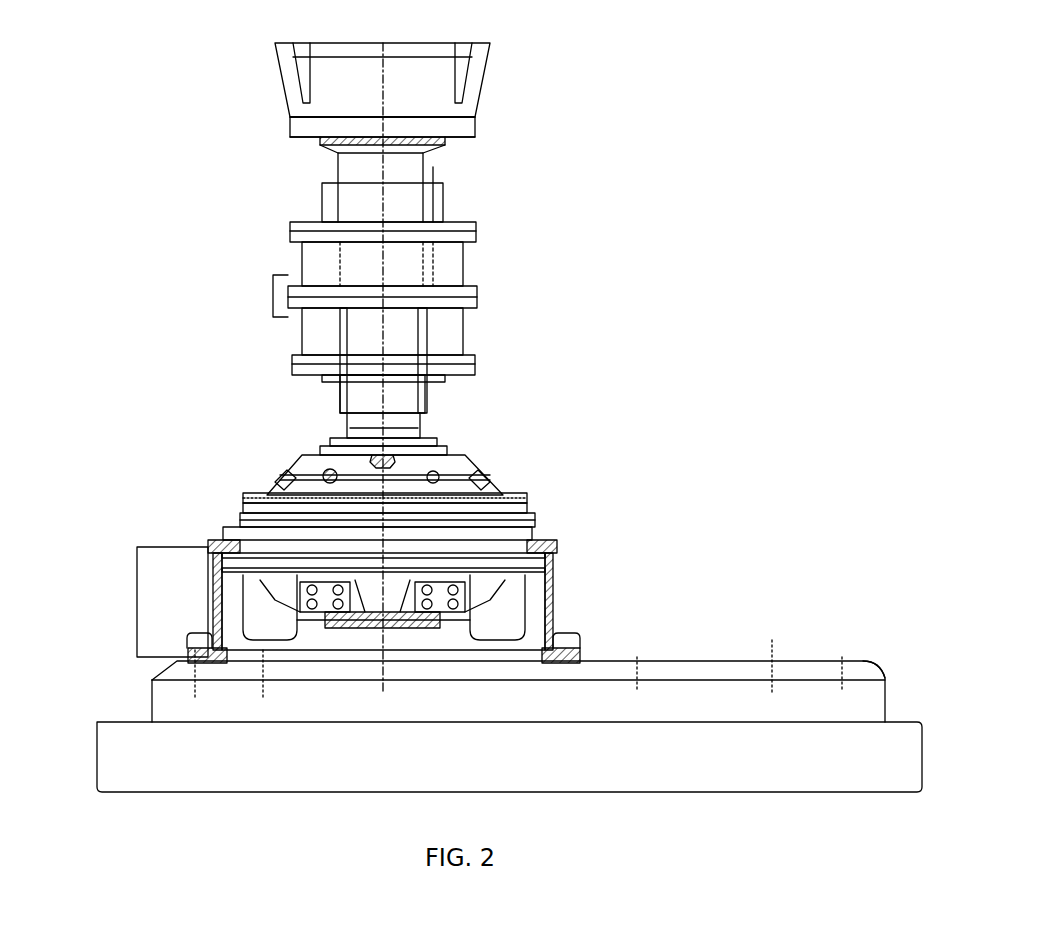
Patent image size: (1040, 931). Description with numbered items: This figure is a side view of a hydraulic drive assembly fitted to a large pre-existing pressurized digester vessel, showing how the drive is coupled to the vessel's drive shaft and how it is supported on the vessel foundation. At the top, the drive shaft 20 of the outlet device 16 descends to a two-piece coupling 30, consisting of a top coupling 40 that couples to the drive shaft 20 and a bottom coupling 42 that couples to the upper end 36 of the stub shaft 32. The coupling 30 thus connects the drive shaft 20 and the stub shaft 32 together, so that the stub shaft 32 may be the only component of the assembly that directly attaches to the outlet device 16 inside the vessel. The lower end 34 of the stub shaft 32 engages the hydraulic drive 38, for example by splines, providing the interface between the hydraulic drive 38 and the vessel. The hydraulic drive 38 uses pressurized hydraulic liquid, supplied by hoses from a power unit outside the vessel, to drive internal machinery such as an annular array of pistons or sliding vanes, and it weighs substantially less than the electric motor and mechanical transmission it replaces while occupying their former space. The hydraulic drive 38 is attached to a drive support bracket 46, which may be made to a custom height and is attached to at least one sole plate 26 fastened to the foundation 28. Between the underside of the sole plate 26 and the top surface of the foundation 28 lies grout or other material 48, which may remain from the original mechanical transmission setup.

The outlet device 16 is at (470, 102).
The drive shaft 20 is at (403, 258).
The sole plate 26 is at (613, 670).
The foundation 28 is at (912, 740).
The coupling 30 is at (273, 290).
The stub shaft 32 is at (403, 400).
The lower end 34 is at (427, 433).
The upper end 36 is at (398, 328).
The hydraulic drive 38 is at (527, 508).
The top coupling 40 is at (315, 265).
The bottom coupling 42 is at (315, 337).
The drive support bracket 46 is at (137, 585).
The grout material 48 is at (867, 693).